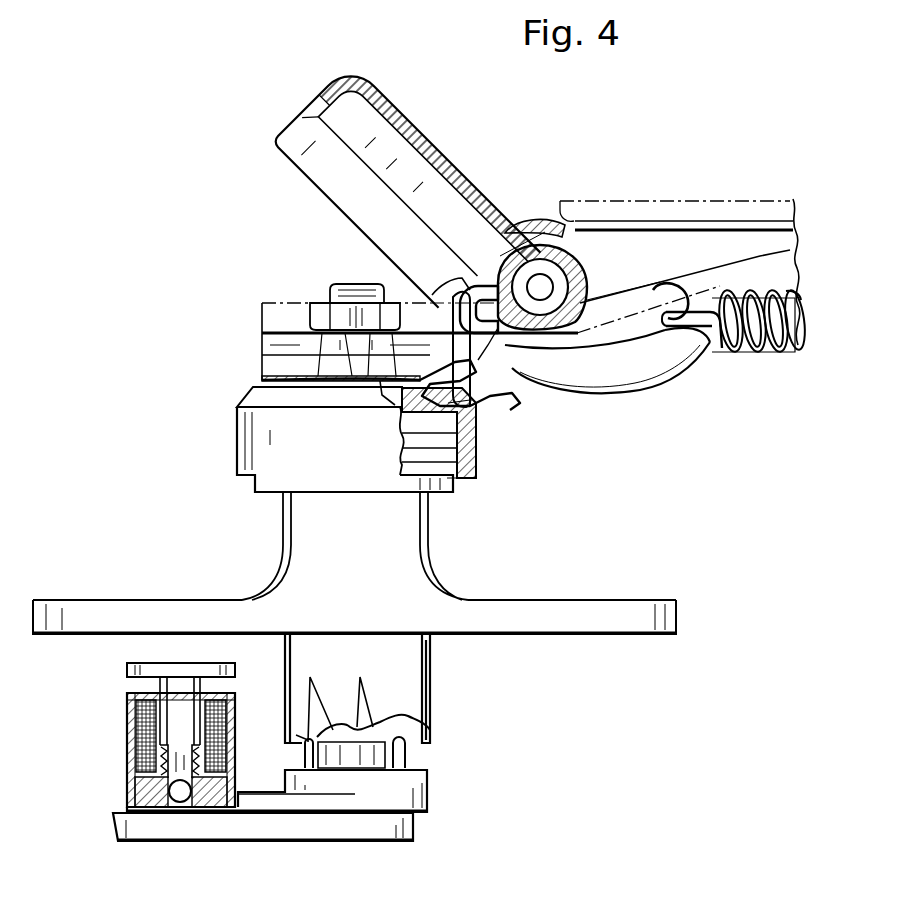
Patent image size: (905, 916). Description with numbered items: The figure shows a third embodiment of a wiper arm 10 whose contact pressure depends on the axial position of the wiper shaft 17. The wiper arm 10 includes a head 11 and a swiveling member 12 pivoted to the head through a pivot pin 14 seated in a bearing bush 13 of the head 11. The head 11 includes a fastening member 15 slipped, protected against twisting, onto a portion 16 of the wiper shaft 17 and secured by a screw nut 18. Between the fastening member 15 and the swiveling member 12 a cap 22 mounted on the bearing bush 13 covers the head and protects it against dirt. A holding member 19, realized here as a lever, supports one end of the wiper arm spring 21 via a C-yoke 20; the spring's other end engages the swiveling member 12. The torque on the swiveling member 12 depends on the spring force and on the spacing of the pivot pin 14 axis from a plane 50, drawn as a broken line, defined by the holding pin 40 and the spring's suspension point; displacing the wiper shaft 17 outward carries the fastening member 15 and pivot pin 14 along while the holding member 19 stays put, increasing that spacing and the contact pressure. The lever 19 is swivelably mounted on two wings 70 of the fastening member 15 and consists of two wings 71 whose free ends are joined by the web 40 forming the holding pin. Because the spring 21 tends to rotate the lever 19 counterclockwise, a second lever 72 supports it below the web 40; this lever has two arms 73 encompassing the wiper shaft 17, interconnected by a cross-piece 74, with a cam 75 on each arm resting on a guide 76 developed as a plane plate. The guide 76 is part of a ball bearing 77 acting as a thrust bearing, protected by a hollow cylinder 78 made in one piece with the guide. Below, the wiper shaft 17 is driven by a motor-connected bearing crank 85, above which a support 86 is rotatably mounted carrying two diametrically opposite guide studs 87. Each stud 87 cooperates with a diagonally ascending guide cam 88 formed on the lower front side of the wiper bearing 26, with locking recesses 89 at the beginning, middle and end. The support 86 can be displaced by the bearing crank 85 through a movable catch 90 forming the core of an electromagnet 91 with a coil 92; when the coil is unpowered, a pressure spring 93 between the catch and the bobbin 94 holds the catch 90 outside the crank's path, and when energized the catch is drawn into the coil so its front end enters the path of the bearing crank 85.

The wiper arm 10 is at (747, 362).
The head 11 is at (500, 240).
The swiveling member 12 is at (643, 216).
The bearing bush 13 is at (545, 262).
The pivot pin 14 is at (543, 287).
The fastening member 15 is at (433, 294).
The portion of the wiper shaft 16 is at (308, 340).
The wiper shaft 17 is at (356, 290).
The screw nut 18 is at (312, 334).
The holding member 19 is at (698, 350).
The C-yoke 20 is at (622, 378).
The wiper arm spring 21 is at (789, 350).
The cap 22 is at (470, 196).
The wiper bearing 26 is at (410, 663).
The holding pin 40 is at (508, 338).
The plane 50 is at (614, 318).
The wings of the fastening member 70 is at (726, 292).
The wings of the lever 71 is at (578, 362).
The second lever 72 is at (300, 380).
The arms 73 is at (347, 352).
The cross-piece 74 is at (520, 400).
The cam 75 is at (373, 352).
The guide 76 is at (470, 409).
The ball bearing 77 is at (460, 470).
The hollow cylinder 78 is at (480, 467).
The bearing crank 85 is at (415, 828).
The support 86 is at (428, 790).
The guide studs 87 is at (306, 763).
The guide cam 88 is at (371, 724).
The locking recesses 89 is at (332, 724).
The movable catch 90 is at (166, 798).
The electromagnet 91 is at (126, 728).
The coil 92 is at (234, 710).
The pressure spring 93 is at (143, 776).
The bobbin 94 is at (160, 760).